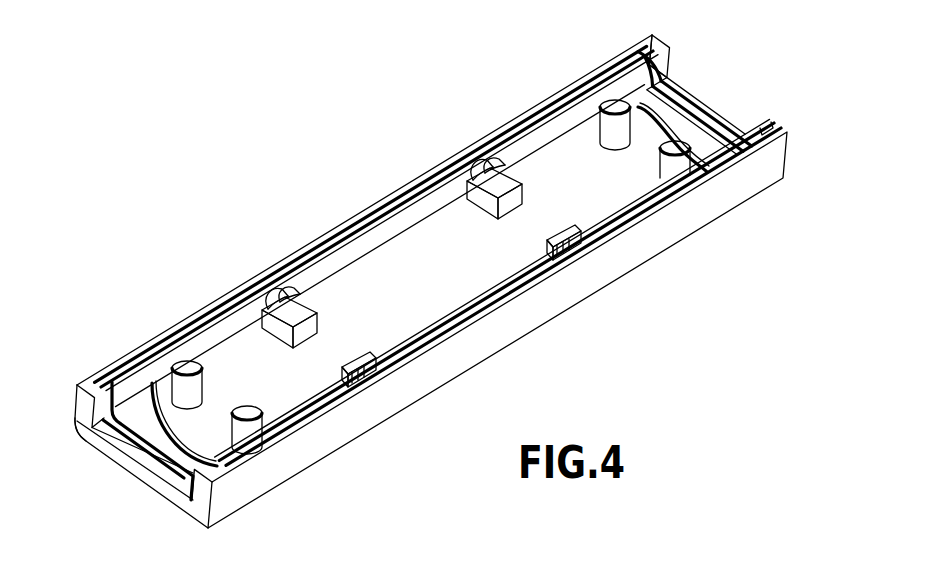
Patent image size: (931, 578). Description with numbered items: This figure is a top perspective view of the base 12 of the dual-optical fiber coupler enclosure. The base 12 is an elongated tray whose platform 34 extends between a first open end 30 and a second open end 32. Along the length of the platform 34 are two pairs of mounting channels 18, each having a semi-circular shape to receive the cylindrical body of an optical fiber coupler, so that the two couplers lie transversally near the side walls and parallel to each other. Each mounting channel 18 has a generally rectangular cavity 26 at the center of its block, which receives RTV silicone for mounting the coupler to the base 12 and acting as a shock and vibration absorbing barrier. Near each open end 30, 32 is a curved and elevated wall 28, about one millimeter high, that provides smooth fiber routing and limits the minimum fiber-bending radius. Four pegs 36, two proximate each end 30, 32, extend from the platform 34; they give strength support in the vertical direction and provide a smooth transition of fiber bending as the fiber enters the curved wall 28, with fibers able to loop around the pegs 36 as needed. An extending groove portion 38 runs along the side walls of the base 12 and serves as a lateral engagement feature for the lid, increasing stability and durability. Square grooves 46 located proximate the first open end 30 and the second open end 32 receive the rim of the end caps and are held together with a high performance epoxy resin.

The base 12 is at (160, 117).
The mounting channels 18 is at (262, 318).
The rectangular cavity 26 is at (300, 290).
The curved and elevated wall 28 is at (150, 383).
The first open end 30 is at (135, 447).
The second open end 32 is at (700, 108).
The platform 34 is at (473, 283).
The pegs 36 is at (188, 368).
The groove portion 38 is at (373, 210).
The square grooves 46 is at (97, 443).